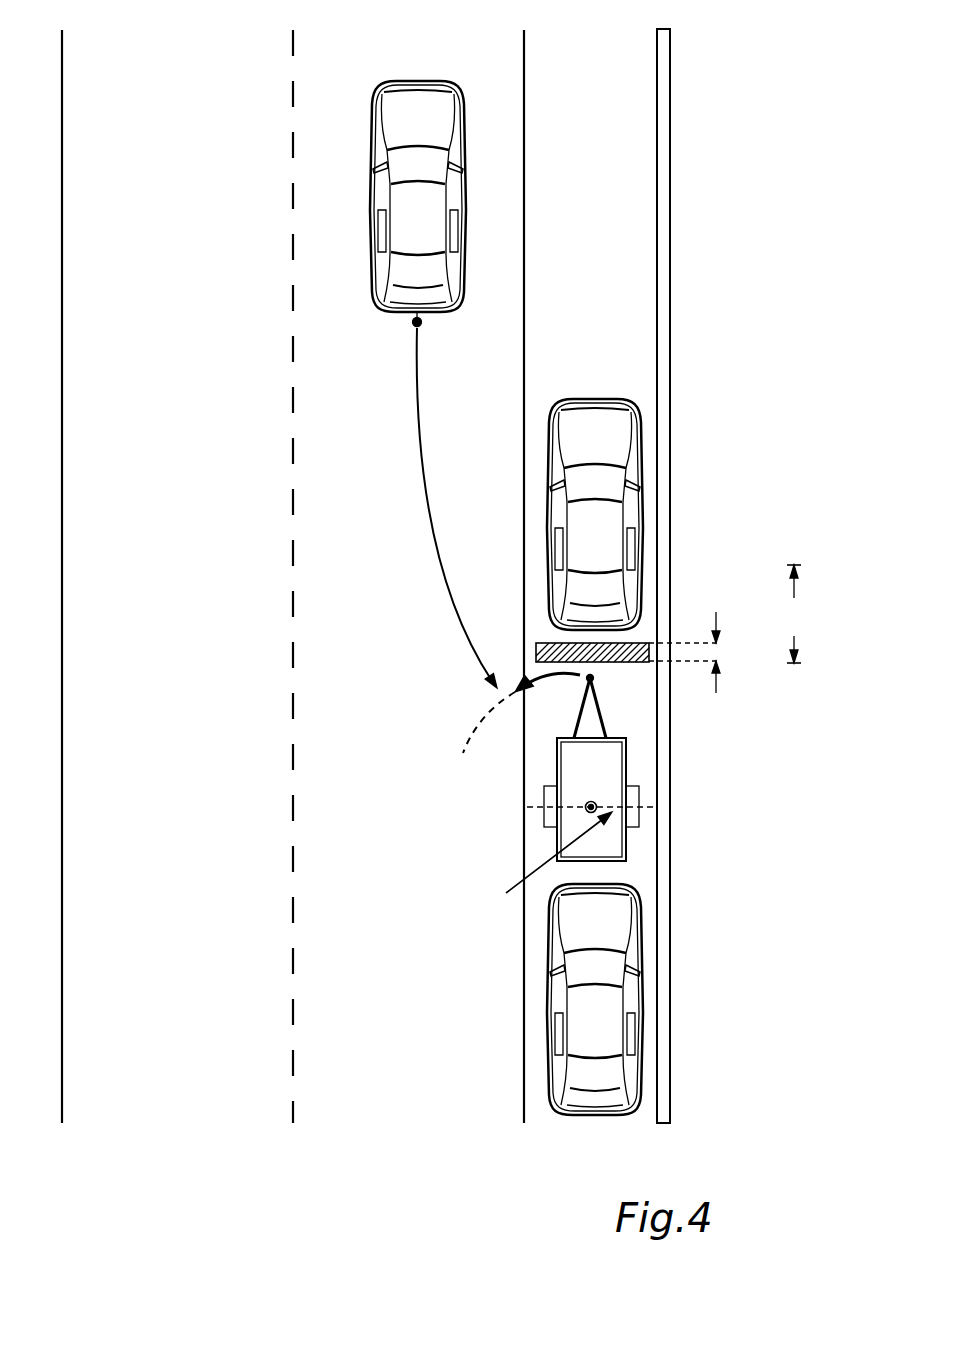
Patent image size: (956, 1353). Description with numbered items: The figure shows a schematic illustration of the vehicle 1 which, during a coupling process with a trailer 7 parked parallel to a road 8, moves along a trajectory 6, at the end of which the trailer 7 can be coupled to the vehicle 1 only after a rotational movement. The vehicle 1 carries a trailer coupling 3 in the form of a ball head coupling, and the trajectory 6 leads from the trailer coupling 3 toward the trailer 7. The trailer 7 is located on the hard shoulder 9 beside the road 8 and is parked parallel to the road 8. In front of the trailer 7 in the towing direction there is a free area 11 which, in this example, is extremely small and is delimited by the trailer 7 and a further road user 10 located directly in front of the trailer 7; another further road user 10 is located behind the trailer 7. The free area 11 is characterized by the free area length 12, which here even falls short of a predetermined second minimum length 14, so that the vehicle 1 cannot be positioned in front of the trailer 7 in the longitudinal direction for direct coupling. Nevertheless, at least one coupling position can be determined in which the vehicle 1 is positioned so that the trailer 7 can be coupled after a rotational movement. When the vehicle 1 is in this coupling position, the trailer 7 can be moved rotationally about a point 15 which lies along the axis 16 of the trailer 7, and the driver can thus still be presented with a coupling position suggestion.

The vehicle 1 is at (452, 86).
The trailer coupling 3 is at (396, 337).
The trajectory 6 is at (431, 488).
The trailer 7 is at (626, 768).
The road 8 is at (422, 1007).
The hard shoulder 9 is at (607, 160).
The further road user 10 is at (640, 463).
The free area 11 is at (634, 643).
The free area length 12 is at (705, 652).
The second minimum length 14 is at (796, 614).
The point 15 is at (584, 806).
The axis 16 is at (542, 864).